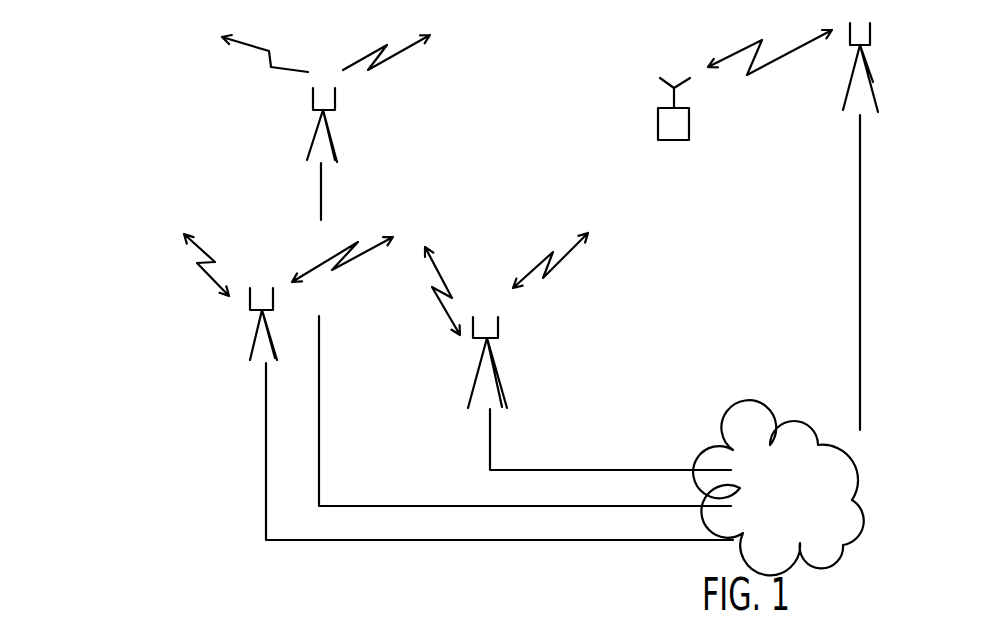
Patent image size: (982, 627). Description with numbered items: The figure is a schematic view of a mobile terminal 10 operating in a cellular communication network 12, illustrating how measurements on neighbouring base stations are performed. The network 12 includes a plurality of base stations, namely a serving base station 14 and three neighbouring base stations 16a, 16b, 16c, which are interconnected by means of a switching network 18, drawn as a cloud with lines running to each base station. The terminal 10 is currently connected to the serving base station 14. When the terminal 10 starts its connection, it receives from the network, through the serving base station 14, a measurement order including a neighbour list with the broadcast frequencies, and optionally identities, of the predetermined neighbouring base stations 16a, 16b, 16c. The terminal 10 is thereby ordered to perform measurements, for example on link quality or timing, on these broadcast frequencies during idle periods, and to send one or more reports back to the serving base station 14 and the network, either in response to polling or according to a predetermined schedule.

The mobile terminal 10 is at (689, 127).
The cellular communication network 12 is at (156, 468).
The serving base station 14 is at (870, 77).
The neighbouring base station 16a is at (328, 143).
The neighbouring base station 16b is at (255, 338).
The neighbouring base station 16c is at (497, 373).
The switching network 18 is at (803, 505).